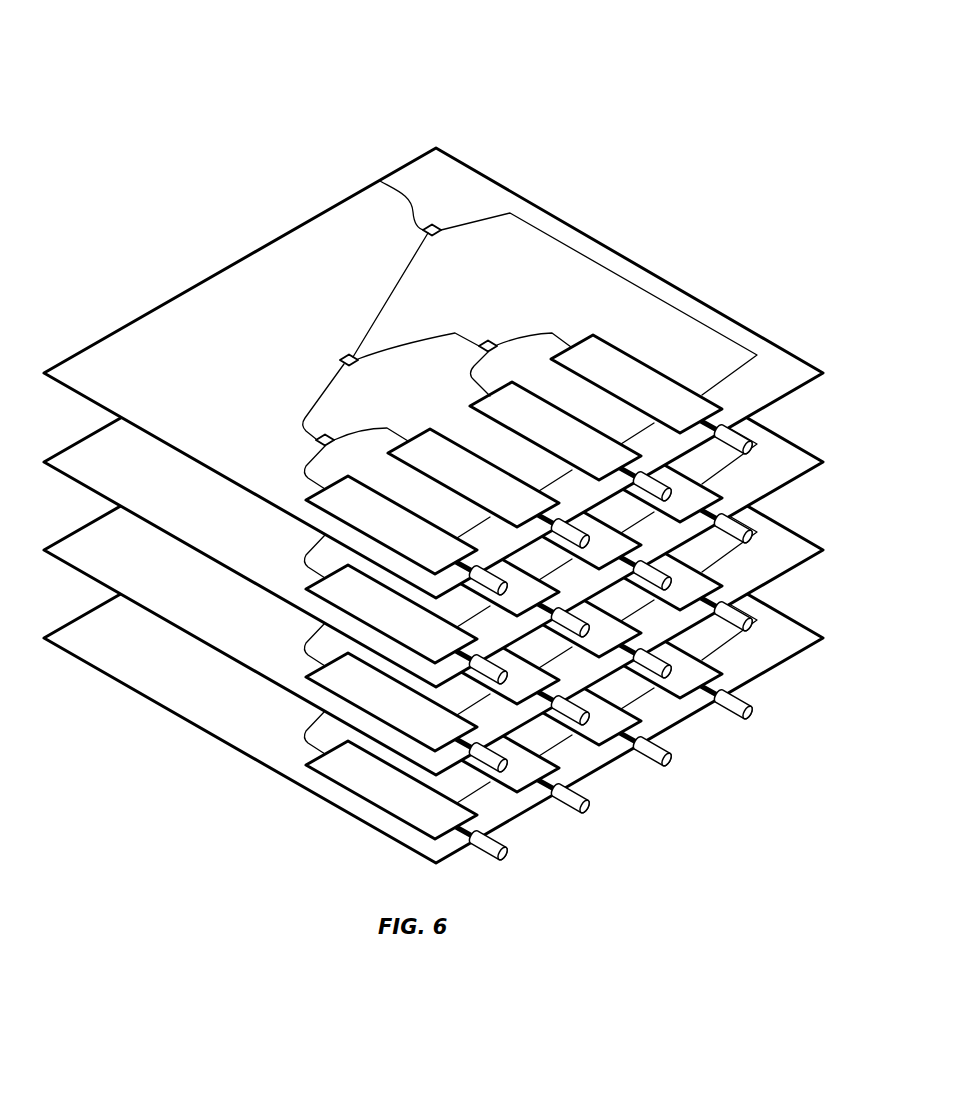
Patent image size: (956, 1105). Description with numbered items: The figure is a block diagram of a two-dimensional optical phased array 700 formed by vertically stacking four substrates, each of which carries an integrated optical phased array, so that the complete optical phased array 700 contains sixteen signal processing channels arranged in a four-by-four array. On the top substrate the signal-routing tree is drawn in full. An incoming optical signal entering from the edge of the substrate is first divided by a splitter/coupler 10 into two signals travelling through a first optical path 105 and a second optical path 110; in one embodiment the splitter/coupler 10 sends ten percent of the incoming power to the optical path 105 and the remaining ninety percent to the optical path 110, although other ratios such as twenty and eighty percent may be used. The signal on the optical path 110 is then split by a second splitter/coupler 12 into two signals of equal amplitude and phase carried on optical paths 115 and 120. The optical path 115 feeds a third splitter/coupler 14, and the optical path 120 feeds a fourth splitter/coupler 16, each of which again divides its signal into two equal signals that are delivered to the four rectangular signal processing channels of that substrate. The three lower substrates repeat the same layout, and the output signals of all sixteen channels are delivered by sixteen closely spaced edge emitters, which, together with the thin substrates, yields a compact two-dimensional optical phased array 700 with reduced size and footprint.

The two-dimensional optical phased array 700 is at (592, 90).
The splitter/coupler 10 is at (438, 225).
The splitter/coupler 12 is at (345, 357).
The splitter/coupler 14 is at (490, 342).
The splitter/coupler 16 is at (327, 435).
The optical path 105 is at (720, 382).
The optical path 110 is at (390, 294).
The optical path 115 is at (401, 341).
The optical path 120 is at (318, 399).